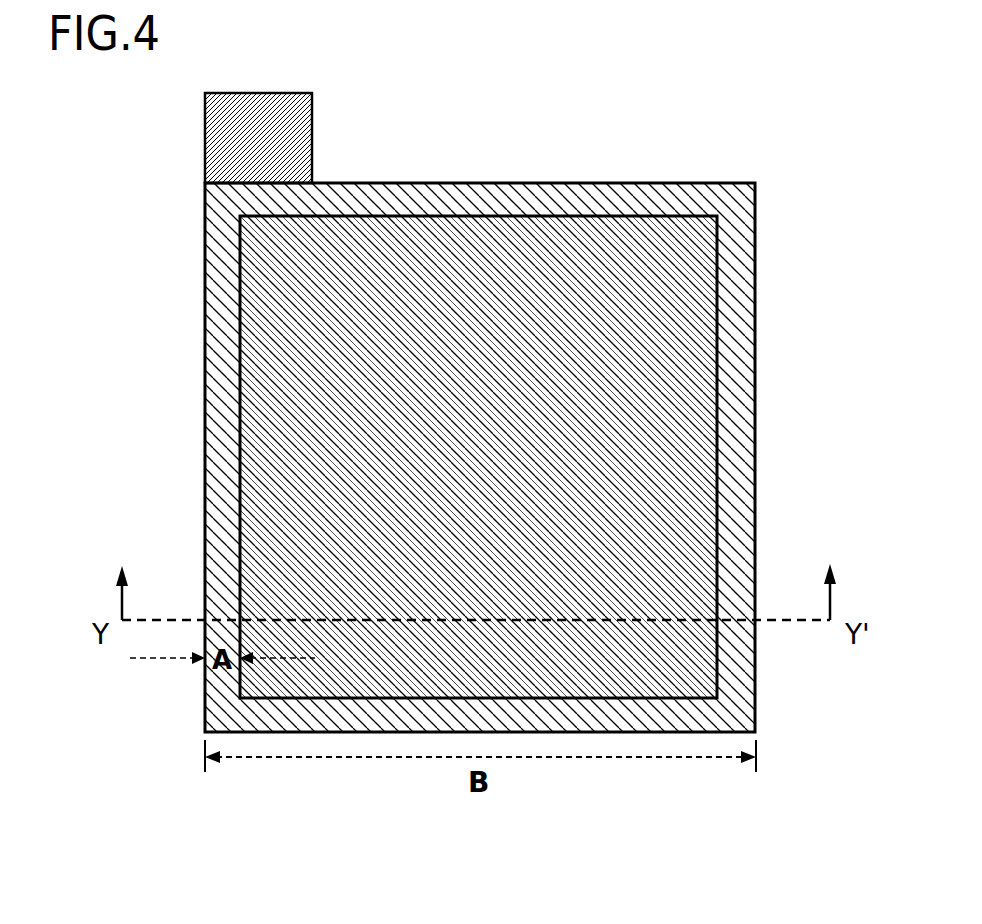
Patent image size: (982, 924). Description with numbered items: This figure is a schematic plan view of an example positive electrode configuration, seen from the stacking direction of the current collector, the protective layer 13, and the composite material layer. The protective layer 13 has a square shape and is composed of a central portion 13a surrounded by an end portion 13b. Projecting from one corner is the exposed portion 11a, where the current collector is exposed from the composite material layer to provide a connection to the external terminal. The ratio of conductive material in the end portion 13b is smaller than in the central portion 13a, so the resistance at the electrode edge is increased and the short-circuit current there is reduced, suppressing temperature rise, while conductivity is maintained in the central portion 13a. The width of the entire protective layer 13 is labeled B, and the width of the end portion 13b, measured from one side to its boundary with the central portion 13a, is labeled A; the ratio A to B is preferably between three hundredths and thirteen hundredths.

The exposed portion 11a is at (300, 150).
The protective layer 13 is at (563, 457).
The central portion 13a is at (675, 412).
The end portion 13b is at (735, 328).